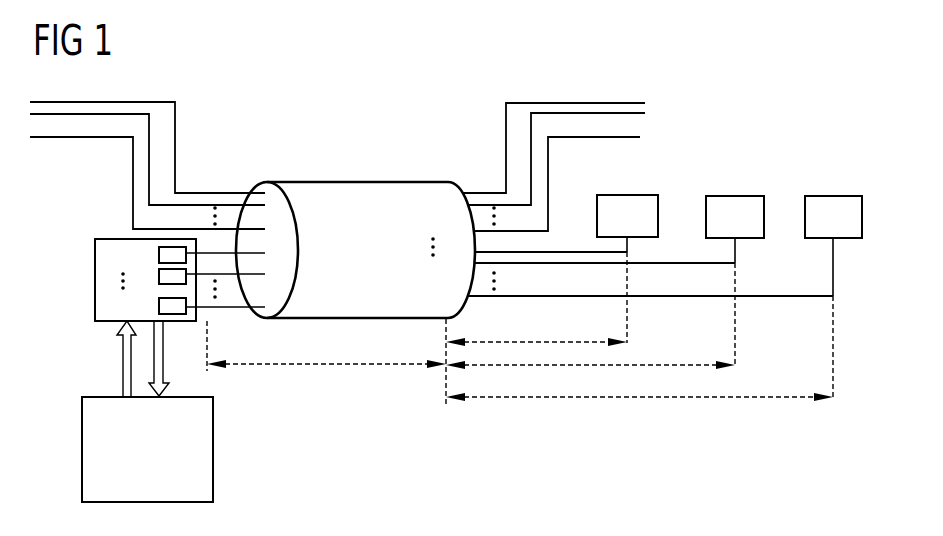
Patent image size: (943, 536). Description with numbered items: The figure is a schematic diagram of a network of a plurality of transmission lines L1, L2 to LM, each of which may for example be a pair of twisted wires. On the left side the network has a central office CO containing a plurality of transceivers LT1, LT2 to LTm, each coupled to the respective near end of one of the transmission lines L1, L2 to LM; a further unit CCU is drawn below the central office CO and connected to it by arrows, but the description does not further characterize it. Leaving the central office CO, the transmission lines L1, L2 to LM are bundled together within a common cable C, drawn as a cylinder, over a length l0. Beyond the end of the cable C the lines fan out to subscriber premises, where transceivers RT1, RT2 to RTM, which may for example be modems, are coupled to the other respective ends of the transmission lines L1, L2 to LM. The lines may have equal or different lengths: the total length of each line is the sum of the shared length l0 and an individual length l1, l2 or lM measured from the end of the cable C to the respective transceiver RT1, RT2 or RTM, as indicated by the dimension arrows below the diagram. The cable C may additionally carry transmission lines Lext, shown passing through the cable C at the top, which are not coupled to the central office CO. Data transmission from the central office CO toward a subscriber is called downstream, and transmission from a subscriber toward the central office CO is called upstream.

The cable C is at (355, 182).
The central office CO is at (95, 277).
The transceiver LT1 is at (159, 252).
The transceiver LT2 is at (159, 275).
The transceiver LTm is at (159, 300).
The central control unit CCU is at (213, 447).
The transmission lines Lext is at (646, 100).
The transmission line L1 is at (565, 251).
The transmission line L2 is at (677, 262).
The transmission line LM is at (780, 295).
The transceiver RT1 is at (627, 223).
The transceiver RT2 is at (735, 229).
The transceiver RTM is at (833, 246).
The length l0 is at (326, 349).
The length l1 is at (536, 327).
The length l2 is at (590, 350).
The length lM is at (639, 381).